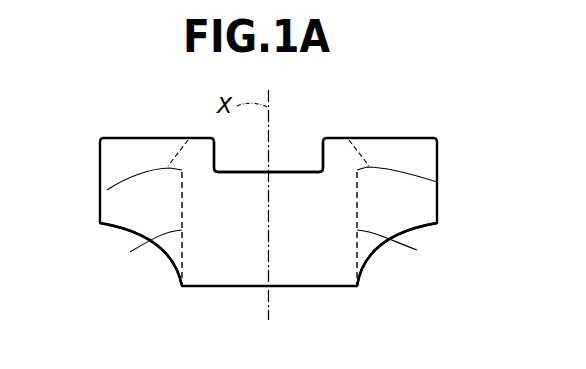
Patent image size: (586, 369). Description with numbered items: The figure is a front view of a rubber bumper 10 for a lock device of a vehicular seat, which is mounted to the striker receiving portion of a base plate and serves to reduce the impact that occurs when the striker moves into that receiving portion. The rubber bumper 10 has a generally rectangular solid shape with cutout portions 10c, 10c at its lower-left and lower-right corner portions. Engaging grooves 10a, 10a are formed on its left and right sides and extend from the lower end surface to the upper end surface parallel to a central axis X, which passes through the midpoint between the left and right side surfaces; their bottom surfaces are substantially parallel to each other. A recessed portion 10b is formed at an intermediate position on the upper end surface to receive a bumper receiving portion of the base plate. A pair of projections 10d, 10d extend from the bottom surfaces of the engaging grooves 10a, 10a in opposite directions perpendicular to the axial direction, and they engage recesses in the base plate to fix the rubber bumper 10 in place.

The rubber bumper 10 is at (384, 131).
The engaging grooves 10a is at (130, 252).
The recessed portion 10b is at (285, 162).
The cutout portions 10c is at (159, 265).
The projections 10d is at (107, 190).